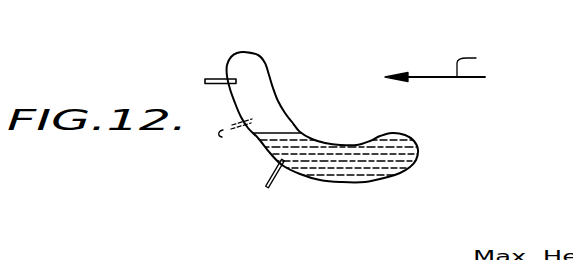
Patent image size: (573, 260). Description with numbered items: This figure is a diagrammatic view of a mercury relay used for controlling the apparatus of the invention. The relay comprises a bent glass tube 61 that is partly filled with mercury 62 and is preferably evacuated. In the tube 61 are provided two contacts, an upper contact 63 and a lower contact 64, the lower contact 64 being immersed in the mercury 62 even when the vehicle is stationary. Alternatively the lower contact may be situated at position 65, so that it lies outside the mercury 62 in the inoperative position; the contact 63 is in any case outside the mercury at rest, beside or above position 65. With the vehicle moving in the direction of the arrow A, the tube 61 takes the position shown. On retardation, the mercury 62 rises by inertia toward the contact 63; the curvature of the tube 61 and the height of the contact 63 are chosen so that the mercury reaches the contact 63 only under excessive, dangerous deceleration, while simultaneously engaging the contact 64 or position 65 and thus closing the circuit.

The bent glass tube 61 is at (262, 103).
The mercury 62 is at (387, 161).
The contact 63 is at (219, 79).
The lower contact 64 is at (278, 186).
The alternative lower contact position 65 is at (221, 138).
The arrow indicating direction of motion A is at (445, 60).